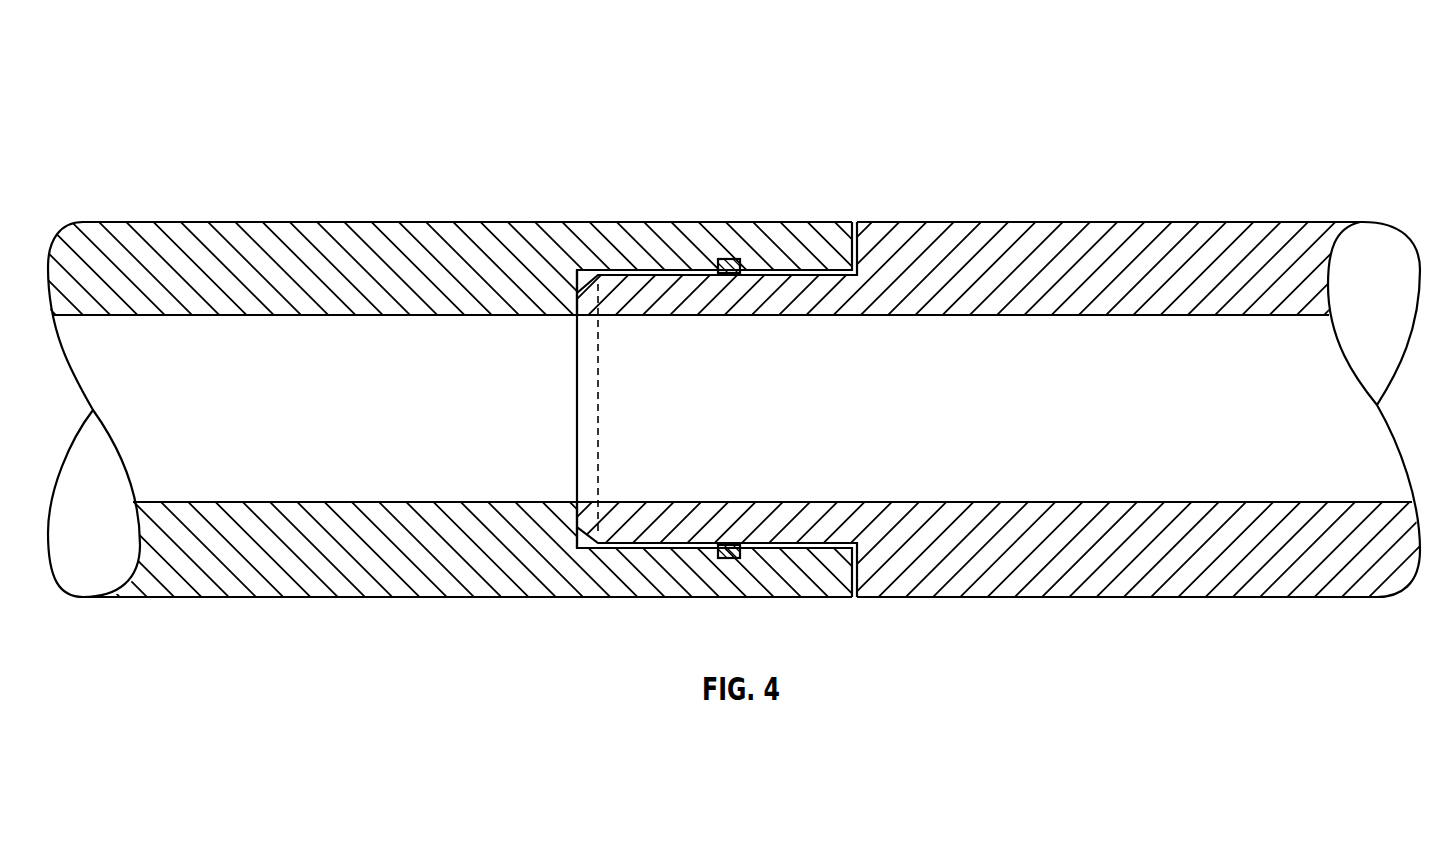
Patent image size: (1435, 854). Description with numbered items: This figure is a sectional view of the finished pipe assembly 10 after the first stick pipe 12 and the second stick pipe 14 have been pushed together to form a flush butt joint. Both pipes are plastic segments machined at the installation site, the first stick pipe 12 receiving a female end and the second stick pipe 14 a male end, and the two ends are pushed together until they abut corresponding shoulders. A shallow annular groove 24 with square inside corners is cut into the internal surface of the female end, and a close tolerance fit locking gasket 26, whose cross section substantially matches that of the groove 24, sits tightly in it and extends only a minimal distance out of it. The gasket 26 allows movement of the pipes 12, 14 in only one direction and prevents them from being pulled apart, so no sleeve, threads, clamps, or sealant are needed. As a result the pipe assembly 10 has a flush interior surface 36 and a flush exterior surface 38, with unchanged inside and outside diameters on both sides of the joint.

The pipe assembly 10 is at (158, 81).
The first stick pipe 12 is at (411, 222).
The second stick pipe 14 is at (1018, 222).
The annular groove 24 is at (723, 262).
The close tolerance fit locking gasket 26 is at (722, 272).
The interior surface 36 is at (388, 317).
The exterior surface 38 is at (222, 222).